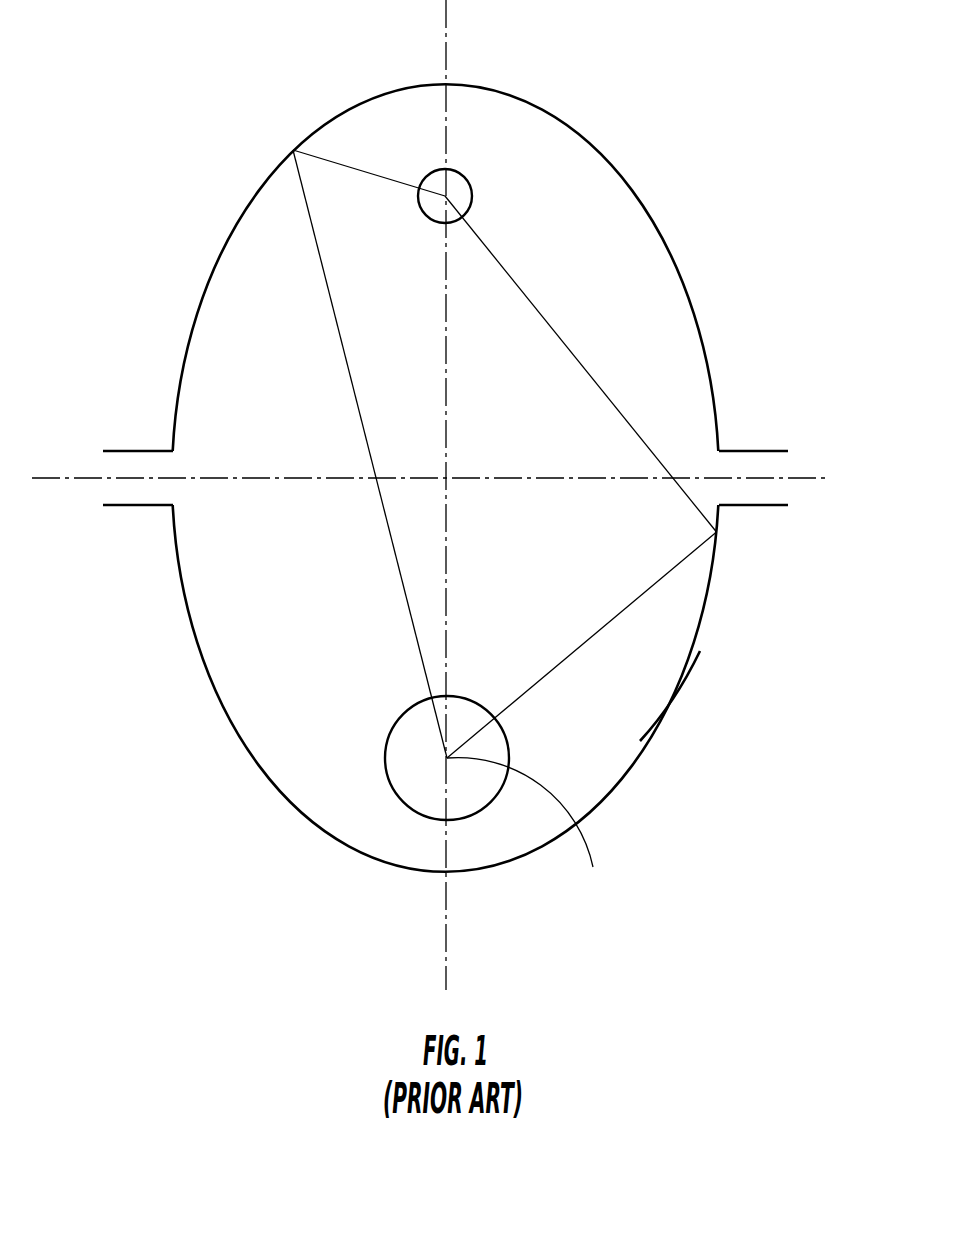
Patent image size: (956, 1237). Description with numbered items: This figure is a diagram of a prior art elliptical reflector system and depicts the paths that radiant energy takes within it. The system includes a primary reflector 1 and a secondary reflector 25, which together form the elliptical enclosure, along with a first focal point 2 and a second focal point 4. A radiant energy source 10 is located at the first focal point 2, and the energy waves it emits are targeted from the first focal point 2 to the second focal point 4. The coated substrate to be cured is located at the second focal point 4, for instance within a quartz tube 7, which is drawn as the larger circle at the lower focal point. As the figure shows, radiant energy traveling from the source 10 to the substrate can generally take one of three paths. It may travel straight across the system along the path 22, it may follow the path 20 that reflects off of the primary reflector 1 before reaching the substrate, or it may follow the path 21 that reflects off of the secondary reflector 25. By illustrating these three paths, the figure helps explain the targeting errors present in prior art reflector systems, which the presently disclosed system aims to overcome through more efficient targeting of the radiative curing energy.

The primary reflector 1 is at (663, 228).
The first focal point 2 is at (433, 168).
The second focal point 4 is at (522, 829).
The quartz tube 7 is at (447, 758).
The radiant energy source 10 is at (474, 195).
The path 20 is at (345, 362).
The path 21 is at (606, 395).
The path 22 is at (450, 650).
The secondary reflector 25 is at (677, 697).